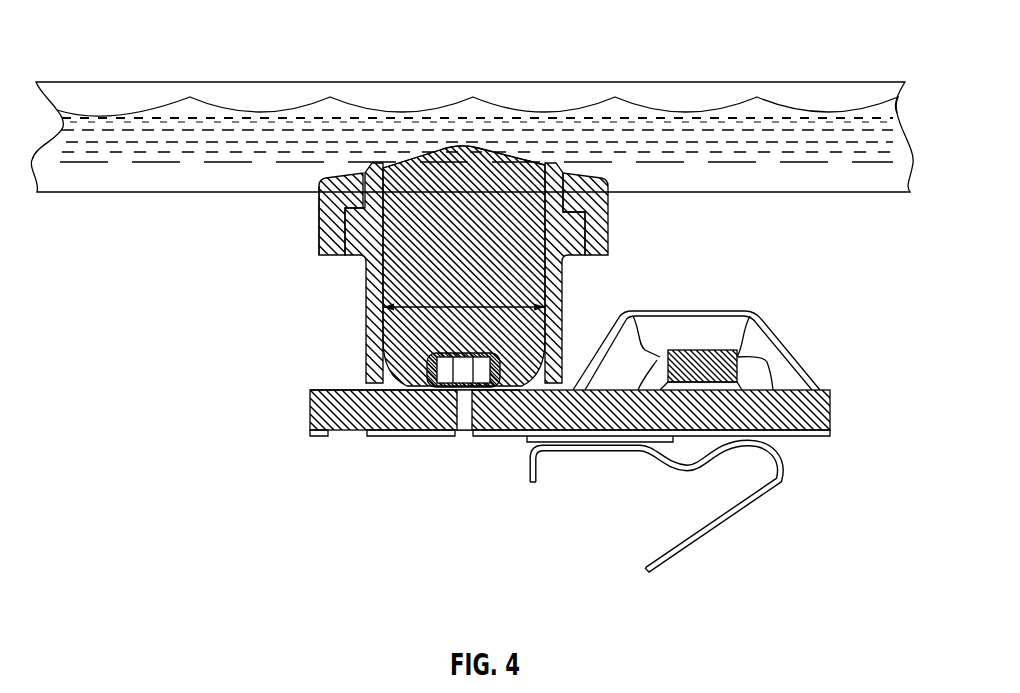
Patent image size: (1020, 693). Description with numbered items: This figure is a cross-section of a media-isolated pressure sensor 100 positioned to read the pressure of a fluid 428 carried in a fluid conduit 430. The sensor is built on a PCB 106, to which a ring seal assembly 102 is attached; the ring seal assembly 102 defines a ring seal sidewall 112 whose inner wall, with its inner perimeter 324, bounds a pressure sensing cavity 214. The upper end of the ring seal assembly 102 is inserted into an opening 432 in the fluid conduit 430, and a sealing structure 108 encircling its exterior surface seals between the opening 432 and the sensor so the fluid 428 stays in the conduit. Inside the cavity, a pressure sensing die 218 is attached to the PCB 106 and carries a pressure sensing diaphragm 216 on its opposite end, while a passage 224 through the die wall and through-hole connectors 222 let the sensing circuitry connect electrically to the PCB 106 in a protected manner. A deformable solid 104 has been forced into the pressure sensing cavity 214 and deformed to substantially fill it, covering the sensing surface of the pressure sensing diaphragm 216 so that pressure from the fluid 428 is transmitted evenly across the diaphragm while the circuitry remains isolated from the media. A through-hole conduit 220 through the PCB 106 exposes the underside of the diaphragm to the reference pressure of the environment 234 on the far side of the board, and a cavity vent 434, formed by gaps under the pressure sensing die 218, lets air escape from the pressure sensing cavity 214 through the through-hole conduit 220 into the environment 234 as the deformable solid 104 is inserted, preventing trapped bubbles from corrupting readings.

The media-isolated pressure sensor 100 is at (429, 67).
The ring seal assembly 102 is at (296, 268).
The deformable solid 104 is at (527, 250).
The PCB 106 is at (323, 392).
The sealing structure 108 is at (610, 204).
The ring seal sidewall 112 is at (565, 285).
The pressure sensing cavity 214 is at (506, 172).
The pressure sensing diaphragm 216 is at (441, 372).
The pressure sensing die 218 is at (421, 393).
The through-hole conduit 220 is at (461, 436).
The through-hole connectors 222 is at (503, 372).
The passage 224 is at (480, 396).
The environment 234 is at (488, 551).
The inner perimeter 324 is at (519, 313).
The fluid 428 is at (237, 160).
The fluid conduit 430 is at (106, 193).
The opening 432 is at (313, 202).
The cavity vent 434 is at (489, 393).